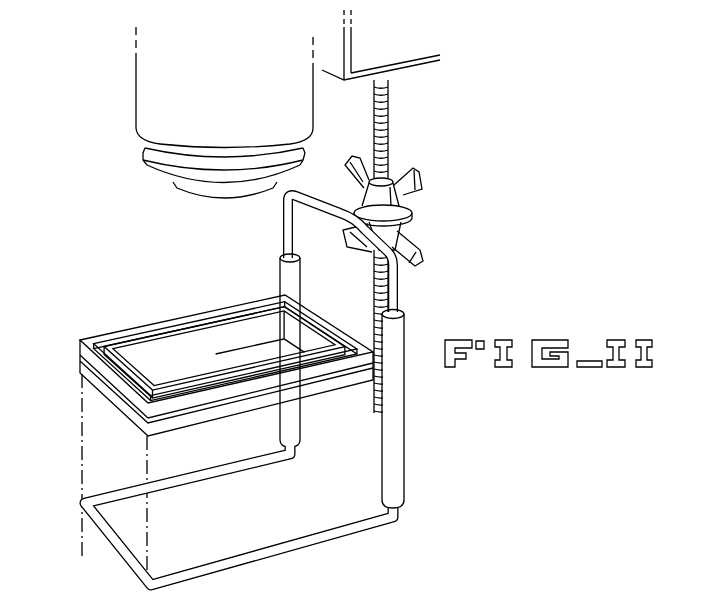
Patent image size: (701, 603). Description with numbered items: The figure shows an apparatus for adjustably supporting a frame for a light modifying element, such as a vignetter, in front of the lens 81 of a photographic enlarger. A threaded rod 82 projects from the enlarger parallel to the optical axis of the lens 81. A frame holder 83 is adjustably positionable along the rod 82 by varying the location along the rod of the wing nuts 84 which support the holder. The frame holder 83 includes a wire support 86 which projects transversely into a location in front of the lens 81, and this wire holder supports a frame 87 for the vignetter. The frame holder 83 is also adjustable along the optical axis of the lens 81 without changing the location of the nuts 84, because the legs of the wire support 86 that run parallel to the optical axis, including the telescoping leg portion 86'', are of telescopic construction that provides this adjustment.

The lens 81 is at (175, 189).
The threaded rod 82 is at (385, 120).
The frame holder 83 is at (415, 310).
The wing nuts 84 is at (410, 183).
The wire support 86 is at (239, 390).
The telescopic leg of wire support 86'' is at (429, 409).
The frame 87 is at (79, 339).